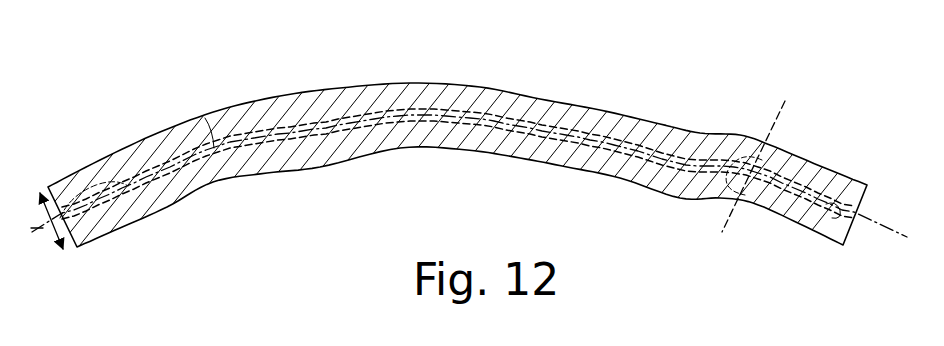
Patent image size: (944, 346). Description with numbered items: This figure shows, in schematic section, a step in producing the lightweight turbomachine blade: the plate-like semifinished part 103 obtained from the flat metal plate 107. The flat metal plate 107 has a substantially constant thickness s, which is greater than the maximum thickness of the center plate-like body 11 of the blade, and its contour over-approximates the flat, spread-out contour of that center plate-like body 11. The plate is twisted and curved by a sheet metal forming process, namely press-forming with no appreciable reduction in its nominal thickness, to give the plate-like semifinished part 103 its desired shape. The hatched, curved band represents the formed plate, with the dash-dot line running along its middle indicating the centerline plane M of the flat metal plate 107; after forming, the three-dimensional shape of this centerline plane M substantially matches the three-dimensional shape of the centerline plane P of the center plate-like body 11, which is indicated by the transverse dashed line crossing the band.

The plate-like semifinished part 103 is at (219, 110).
The flat metal plate 107 is at (453, 90).
The center plate-like body 11 is at (735, 204).
The centerline plane M is at (145, 171).
The centerline plane P is at (761, 153).
The thickness s is at (47, 224).